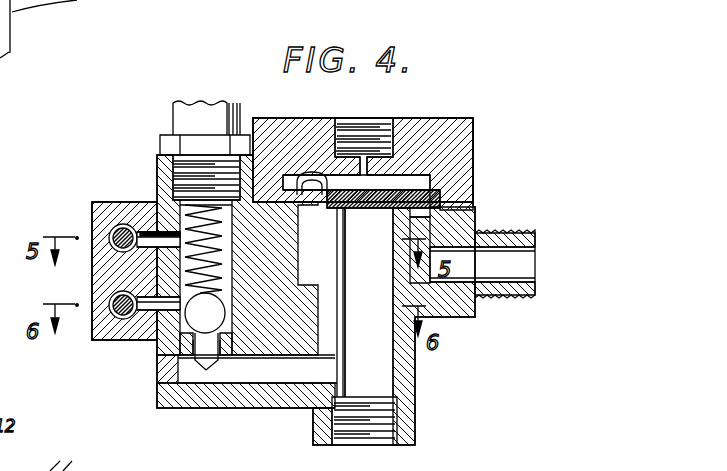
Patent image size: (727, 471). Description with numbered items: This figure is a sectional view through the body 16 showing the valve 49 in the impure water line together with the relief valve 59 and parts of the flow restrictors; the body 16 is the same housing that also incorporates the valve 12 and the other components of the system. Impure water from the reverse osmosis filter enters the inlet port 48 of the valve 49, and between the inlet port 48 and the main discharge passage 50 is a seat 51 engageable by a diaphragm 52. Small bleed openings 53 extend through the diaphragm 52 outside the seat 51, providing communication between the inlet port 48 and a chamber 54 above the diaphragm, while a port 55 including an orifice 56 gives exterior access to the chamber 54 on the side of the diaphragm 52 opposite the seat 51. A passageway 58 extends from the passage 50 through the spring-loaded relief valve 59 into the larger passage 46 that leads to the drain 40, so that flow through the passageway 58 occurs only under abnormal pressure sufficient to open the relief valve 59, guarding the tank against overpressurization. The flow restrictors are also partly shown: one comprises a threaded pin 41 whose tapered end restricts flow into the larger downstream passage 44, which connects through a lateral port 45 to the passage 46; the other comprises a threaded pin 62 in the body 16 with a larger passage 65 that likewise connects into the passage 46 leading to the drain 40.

The valve 12 is at (217, 420).
The body 16 is at (408, 372).
The drain 40 is at (175, 118).
The threaded pin 41 is at (120, 243).
The larger downstream passage 44 is at (116, 228).
The lateral port 45 is at (142, 233).
The larger passage 46 is at (183, 213).
The inlet port 48 is at (508, 277).
The valve 49 is at (444, 197).
The main discharge passage 50 is at (351, 445).
The seat 51 is at (386, 212).
The diaphragm 52 is at (323, 188).
The small bleed openings 53 is at (432, 184).
The chamber 54 is at (421, 177).
The port 55 is at (360, 118).
The orifice 56 is at (362, 174).
The passageway 58 is at (265, 378).
The spring-loaded relief valve 59 is at (225, 312).
The threaded pin 62 is at (112, 297).
The larger passage 65 is at (112, 313).